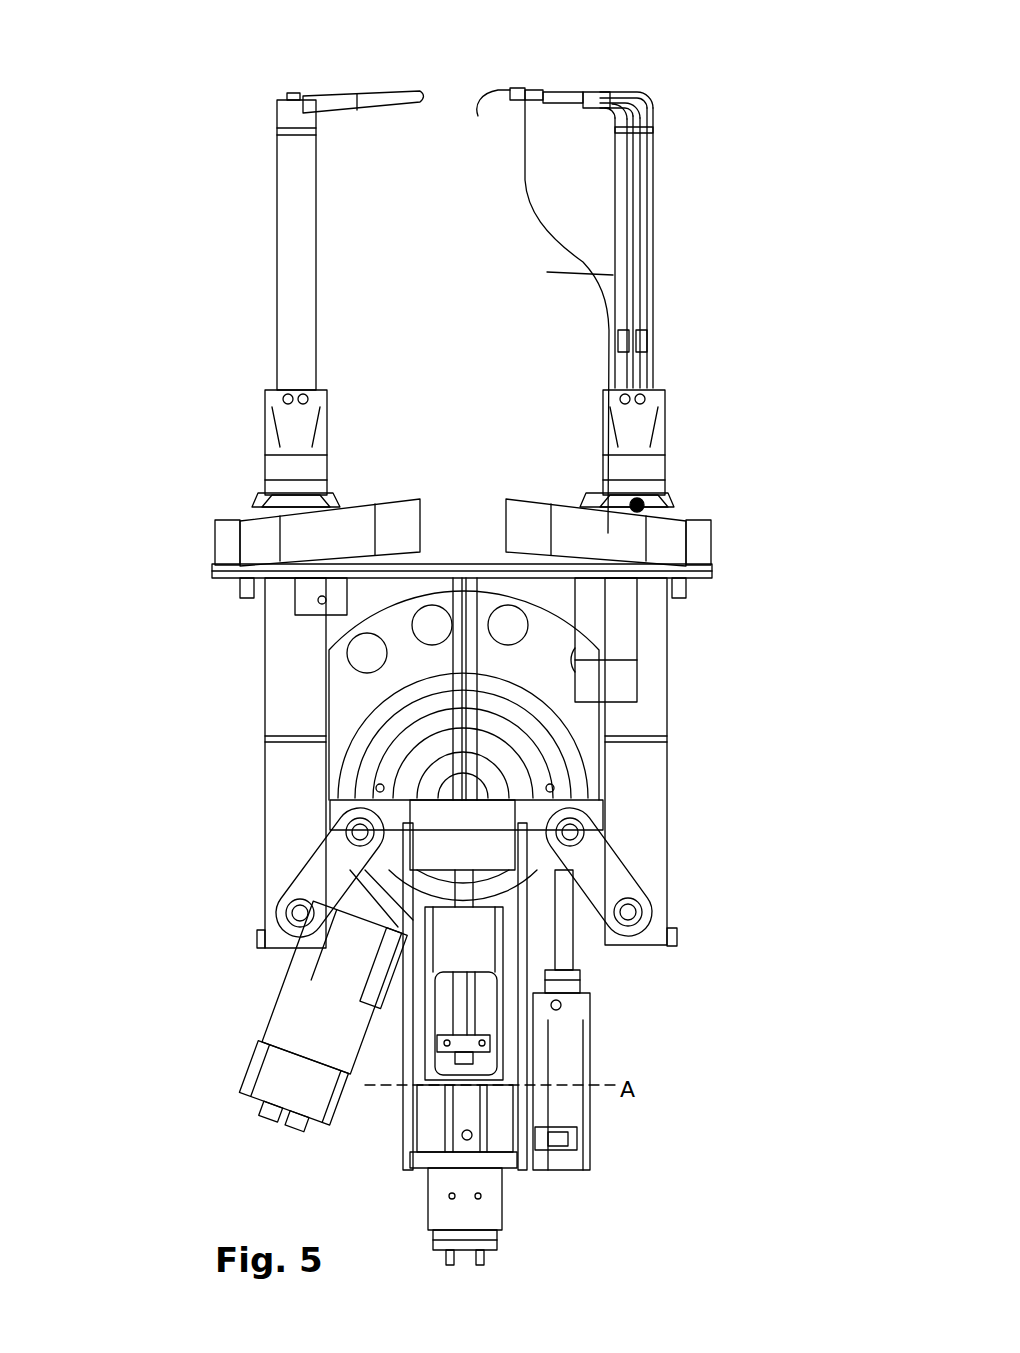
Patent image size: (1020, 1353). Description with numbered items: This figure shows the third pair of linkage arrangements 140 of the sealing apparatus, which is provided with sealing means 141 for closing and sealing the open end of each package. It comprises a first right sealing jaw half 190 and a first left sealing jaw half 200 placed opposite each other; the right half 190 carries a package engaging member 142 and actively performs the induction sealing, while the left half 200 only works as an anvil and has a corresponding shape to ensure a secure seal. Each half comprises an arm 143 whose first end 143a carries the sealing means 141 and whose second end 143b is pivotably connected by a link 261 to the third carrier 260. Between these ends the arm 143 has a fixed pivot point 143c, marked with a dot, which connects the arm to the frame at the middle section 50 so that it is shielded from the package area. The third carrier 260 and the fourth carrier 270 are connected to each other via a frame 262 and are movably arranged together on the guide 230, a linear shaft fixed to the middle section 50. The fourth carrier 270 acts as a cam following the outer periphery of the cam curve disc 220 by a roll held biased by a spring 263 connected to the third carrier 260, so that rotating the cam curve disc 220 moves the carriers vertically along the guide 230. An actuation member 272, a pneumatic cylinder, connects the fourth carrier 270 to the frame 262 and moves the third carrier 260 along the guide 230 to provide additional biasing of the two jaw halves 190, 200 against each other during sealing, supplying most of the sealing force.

The third pair of linkage arrangements 140 is at (218, 52).
The sealing means 141 is at (507, 69).
The package engaging member 142 is at (476, 116).
The arm 143 is at (547, 272).
The first end 143a is at (727, 127).
The second end 143b is at (662, 917).
The fixed pivot point 143c is at (668, 484).
The first left sealing jaw half 200 is at (240, 287).
The first right sealing jaw half 190 is at (686, 283).
The middle section 50 is at (570, 560).
The third carrier 260 is at (394, 812).
The guide 230 is at (467, 697).
The cam curve disc 220 is at (580, 753).
The link 261 is at (600, 868).
The frame 262 is at (407, 977).
The fourth carrier 270 is at (473, 943).
The spring 263 is at (565, 1048).
The actuation member 272 is at (493, 1135).